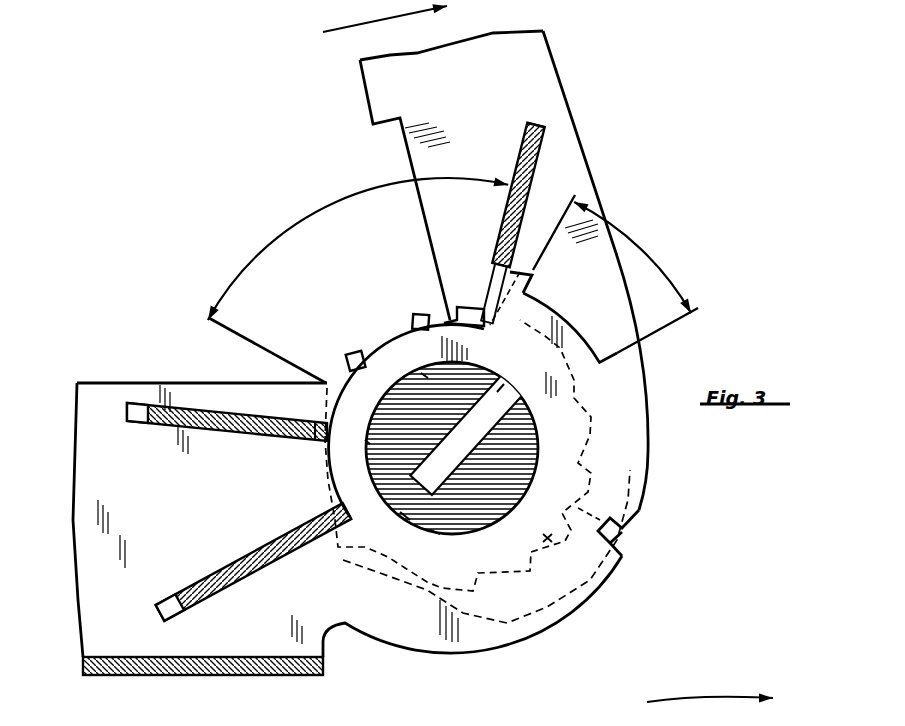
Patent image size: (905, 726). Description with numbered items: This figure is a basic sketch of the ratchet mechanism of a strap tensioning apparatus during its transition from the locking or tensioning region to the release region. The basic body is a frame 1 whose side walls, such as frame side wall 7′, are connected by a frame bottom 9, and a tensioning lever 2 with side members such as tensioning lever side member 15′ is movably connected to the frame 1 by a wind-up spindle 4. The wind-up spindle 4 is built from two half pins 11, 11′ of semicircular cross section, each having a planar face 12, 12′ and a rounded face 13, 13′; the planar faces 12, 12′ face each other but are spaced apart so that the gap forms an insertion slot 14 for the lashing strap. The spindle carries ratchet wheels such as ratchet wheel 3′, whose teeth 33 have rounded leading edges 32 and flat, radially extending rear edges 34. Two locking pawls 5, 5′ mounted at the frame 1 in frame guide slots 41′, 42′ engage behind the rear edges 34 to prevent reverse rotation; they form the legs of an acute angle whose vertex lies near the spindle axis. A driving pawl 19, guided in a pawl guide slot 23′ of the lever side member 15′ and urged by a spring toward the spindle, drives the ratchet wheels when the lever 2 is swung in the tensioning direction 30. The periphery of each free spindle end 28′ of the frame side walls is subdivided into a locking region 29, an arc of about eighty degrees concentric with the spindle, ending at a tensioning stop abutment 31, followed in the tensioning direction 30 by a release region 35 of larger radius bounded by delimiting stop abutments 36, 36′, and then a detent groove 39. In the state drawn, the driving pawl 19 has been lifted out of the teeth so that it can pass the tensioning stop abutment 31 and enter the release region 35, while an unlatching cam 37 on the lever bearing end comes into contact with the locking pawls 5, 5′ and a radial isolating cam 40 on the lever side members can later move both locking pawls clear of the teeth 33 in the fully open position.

The frame 1 is at (145, 679).
The tensioning lever 2 is at (582, 103).
The ratchet wheel 3′ is at (406, 310).
The wind-up spindle 4 is at (486, 538).
The locking pawl 5 is at (230, 578).
The locking pawl 5′ is at (222, 432).
The frame side wall 7′ is at (100, 407).
The frame bottom 9 is at (217, 677).
The half pin 11 is at (521, 473).
The half pin 11′ is at (422, 374).
The planar face 12 is at (403, 516).
The planar face 12′ is at (497, 392).
The rounded face 13 is at (437, 534).
The rounded face 13′ is at (365, 440).
The insertion slot 14 is at (499, 395).
The tensioning lever side member 15′ is at (413, 87).
The driving pawl 19 is at (534, 152).
The pawl guide slot 23′ is at (533, 124).
The free spindle end 28′ is at (372, 350).
The locking region 29 is at (284, 230).
The tensioning direction 30 is at (335, 26).
The tensioning stop abutment 31 is at (487, 298).
The leading edge 32 is at (532, 552).
The tooth 33 is at (550, 538).
The rear edge 34 is at (581, 512).
The release region 35 is at (660, 270).
The delimiting stop abutment 36 is at (603, 362).
The delimiting stop abutment 36′ is at (530, 289).
The unlatching cam 37 is at (338, 555).
The detent groove 39 is at (619, 540).
The radial isolating cam 40 is at (507, 623).
The frame guide slot 41′ is at (136, 421).
The frame guide slot 42′ is at (162, 611).